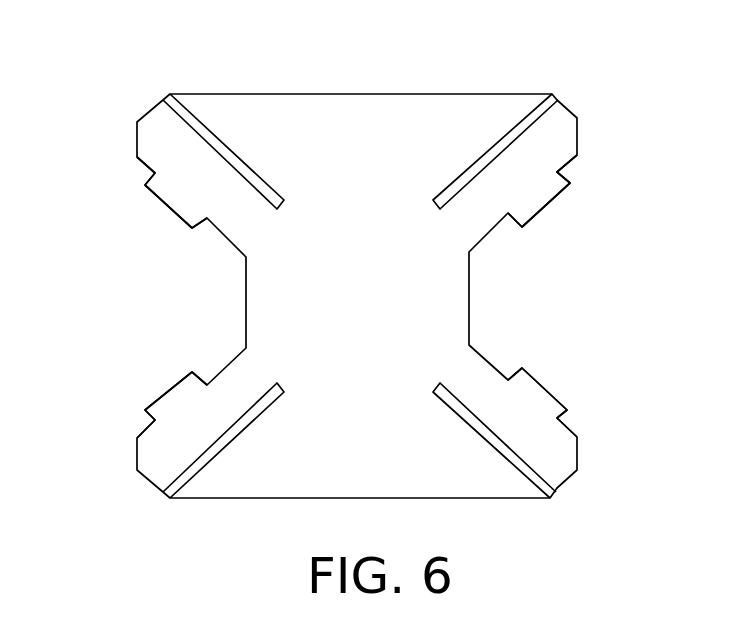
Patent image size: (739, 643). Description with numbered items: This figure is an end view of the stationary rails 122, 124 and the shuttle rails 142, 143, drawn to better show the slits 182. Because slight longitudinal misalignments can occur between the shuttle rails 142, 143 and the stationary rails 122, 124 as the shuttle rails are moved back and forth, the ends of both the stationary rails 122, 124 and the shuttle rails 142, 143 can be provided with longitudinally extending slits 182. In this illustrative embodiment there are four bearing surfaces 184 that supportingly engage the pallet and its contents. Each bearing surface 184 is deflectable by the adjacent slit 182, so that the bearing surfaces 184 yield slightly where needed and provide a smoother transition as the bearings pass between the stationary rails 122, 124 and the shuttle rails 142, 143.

The stationary rail 122 is at (357, 277).
The stationary rail 124 is at (357, 277).
The shuttle rail 142 is at (357, 277).
The shuttle rail 143 is at (316, 94).
The slit 182 is at (163, 99).
The bearing surface 184 is at (165, 210).